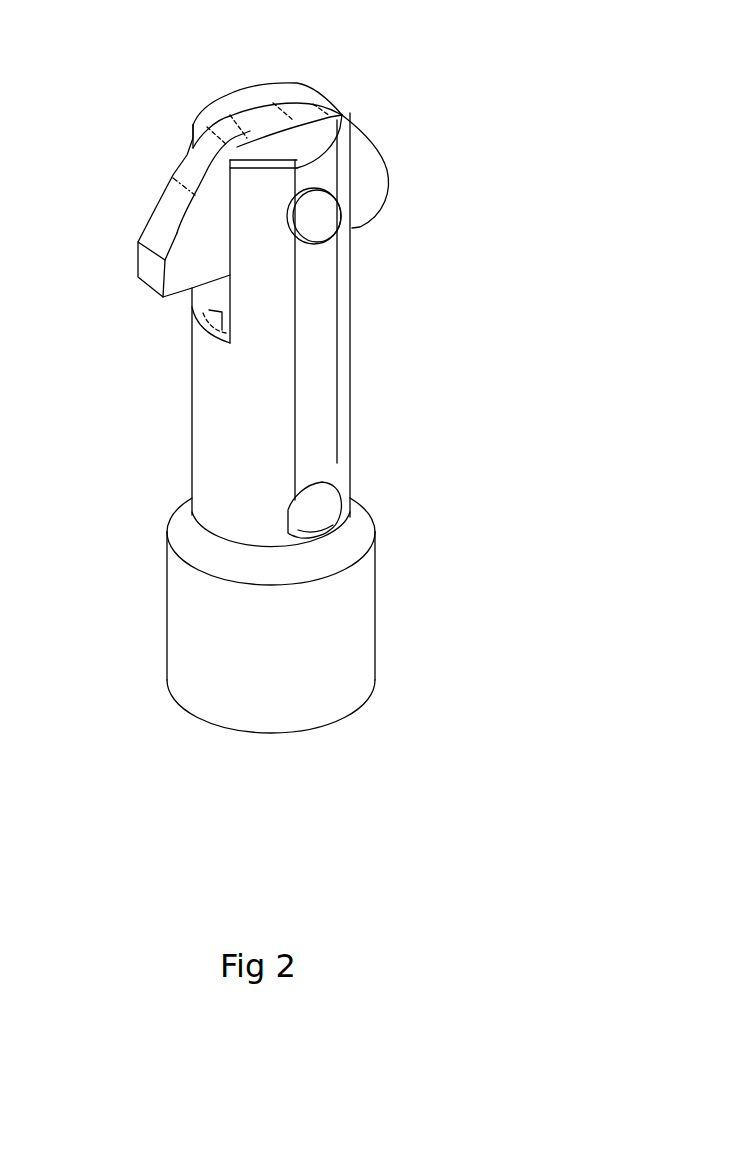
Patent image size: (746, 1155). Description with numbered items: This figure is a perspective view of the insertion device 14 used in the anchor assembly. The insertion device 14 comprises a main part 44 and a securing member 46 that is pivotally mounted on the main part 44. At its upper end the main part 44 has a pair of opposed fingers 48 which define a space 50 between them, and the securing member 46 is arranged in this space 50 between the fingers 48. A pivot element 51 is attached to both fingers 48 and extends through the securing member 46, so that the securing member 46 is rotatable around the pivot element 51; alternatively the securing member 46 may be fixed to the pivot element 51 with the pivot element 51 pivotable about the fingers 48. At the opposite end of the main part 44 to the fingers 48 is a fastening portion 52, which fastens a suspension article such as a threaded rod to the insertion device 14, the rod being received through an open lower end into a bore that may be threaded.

The insertion device 14 is at (145, 418).
The main part 44 is at (342, 357).
The securing member 46 is at (195, 163).
The fingers 48 is at (227, 103).
The space 50 is at (217, 297).
The pivot element 51 is at (317, 214).
The fastening portion 52 is at (195, 647).